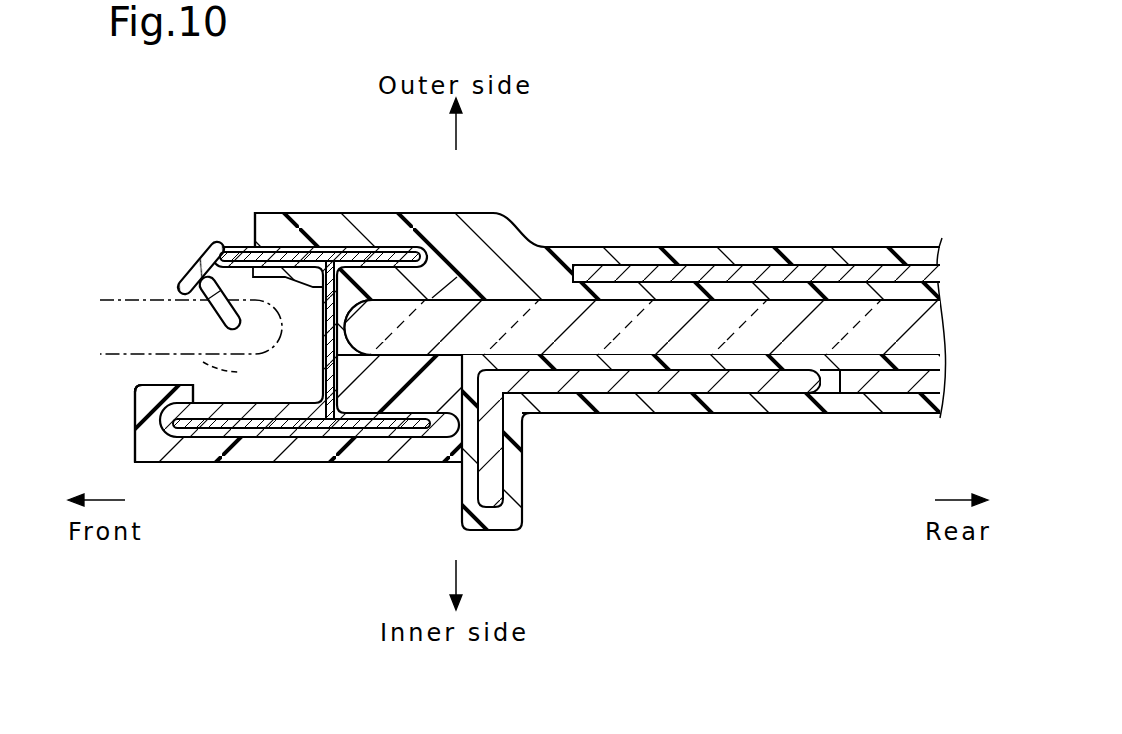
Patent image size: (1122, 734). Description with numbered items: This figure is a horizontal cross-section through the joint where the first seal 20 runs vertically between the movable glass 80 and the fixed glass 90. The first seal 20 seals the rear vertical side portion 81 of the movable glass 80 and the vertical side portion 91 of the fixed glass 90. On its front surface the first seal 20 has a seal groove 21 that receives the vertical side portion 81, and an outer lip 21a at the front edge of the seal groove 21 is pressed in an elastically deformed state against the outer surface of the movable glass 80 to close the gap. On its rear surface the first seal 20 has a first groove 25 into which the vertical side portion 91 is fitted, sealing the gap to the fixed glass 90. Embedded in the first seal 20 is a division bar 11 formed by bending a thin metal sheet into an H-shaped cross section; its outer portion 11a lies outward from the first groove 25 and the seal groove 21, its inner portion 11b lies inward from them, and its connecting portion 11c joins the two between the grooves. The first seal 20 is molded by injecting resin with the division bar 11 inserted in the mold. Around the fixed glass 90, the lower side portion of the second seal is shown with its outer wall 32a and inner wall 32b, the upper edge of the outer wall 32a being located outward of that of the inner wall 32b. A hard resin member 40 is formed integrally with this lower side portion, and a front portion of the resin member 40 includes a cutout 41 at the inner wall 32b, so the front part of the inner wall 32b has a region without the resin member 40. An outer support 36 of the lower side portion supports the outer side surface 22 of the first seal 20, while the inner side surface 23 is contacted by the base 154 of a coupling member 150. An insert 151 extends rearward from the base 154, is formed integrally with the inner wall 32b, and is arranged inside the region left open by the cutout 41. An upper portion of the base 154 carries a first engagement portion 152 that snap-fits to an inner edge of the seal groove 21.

The division bar 11 is at (301, 339).
The outer portion 11a is at (327, 247).
The inner portion 11b is at (288, 428).
The connecting portion 11c is at (334, 376).
The first seal 20 is at (185, 447).
The seal groove 21 is at (257, 405).
The outer lip 21a is at (198, 268).
The outer side surface 22 is at (385, 247).
The inner side surface 23 is at (362, 440).
The first groove 25 is at (500, 425).
The outer wall 32a is at (896, 247).
The inner wall 32b is at (923, 413).
The outer support 36 is at (273, 213).
The resin member 40 is at (630, 265).
The cutout 41 is at (833, 395).
The movable glass 80 is at (132, 290).
The vertical side portion 81 is at (250, 412).
The fixed glass 90 is at (838, 292).
The vertical side portion 91 is at (425, 292).
The coupling member 150 is at (130, 447).
The insert 151 is at (673, 413).
The first engagement portion 152 is at (168, 384).
The base 154 is at (222, 462).